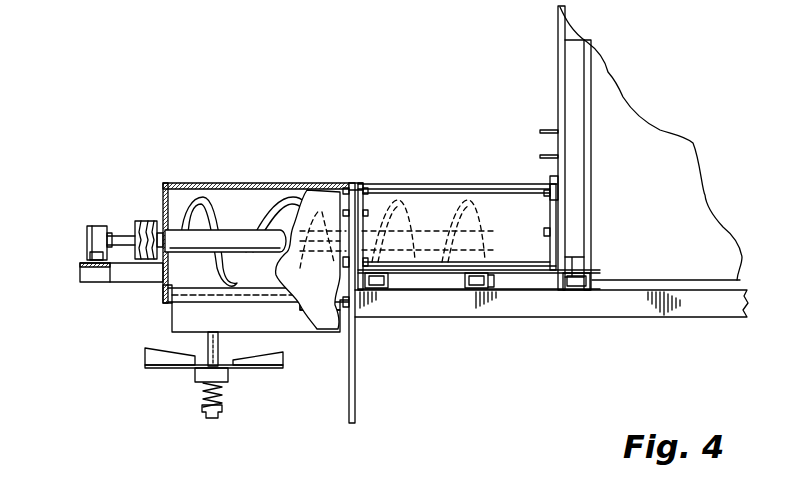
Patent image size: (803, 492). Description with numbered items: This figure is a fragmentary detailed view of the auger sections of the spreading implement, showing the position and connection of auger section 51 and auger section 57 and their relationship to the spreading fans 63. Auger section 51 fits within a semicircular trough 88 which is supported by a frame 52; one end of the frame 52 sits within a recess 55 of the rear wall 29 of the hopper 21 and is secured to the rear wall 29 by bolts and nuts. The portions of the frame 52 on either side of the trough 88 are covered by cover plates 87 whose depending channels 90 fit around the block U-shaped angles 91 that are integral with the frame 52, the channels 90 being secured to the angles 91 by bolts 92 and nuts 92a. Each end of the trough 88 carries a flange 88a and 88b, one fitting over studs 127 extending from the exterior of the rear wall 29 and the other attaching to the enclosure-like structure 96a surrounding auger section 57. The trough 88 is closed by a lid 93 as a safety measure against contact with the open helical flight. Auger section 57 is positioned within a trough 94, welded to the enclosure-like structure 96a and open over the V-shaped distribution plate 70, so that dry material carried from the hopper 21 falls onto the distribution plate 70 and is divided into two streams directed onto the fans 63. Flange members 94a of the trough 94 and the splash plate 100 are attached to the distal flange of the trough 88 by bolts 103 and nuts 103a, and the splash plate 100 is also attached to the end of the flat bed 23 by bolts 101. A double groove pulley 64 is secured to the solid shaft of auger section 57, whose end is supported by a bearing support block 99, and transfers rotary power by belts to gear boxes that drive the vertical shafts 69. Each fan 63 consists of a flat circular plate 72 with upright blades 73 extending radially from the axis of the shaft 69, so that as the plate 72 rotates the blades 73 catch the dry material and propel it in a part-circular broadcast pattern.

The hopper 21 is at (622, 130).
The flat bed 23 is at (683, 313).
The rear wall 29 is at (557, 40).
The auger section 51 is at (420, 232).
The frame 52 is at (560, 292).
The recess 55 is at (577, 265).
The auger section 57 is at (247, 233).
The spreading fan 63 is at (274, 420).
The pulley 64 is at (137, 220).
The shaft 69 is at (217, 340).
The distribution plate 70 is at (183, 315).
The circular plate 72 is at (175, 368).
The blade 73 is at (155, 358).
The cover plate 87 is at (522, 260).
The trough 88 is at (442, 203).
The flange 88a is at (556, 193).
The flange 88b is at (354, 185).
The channel 90 is at (500, 278).
The U-shaped angle 91 is at (478, 288).
The bolt 92 is at (463, 277).
The nut 92a is at (490, 281).
The lid 93 is at (462, 203).
The trough 94 is at (185, 270).
The flange member 94a is at (353, 203).
The enclosure-like structure 96a is at (211, 163).
The bearing support block 99 is at (95, 227).
The splash plate 100 is at (357, 390).
The bolt 101 is at (313, 311).
The bolt 103 is at (337, 200).
The nut 103a is at (363, 185).
The stud 127 is at (553, 129).